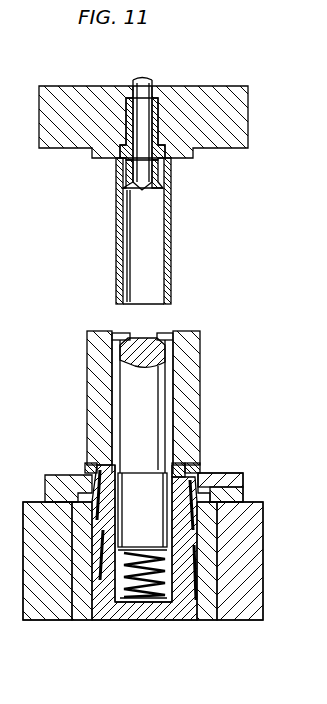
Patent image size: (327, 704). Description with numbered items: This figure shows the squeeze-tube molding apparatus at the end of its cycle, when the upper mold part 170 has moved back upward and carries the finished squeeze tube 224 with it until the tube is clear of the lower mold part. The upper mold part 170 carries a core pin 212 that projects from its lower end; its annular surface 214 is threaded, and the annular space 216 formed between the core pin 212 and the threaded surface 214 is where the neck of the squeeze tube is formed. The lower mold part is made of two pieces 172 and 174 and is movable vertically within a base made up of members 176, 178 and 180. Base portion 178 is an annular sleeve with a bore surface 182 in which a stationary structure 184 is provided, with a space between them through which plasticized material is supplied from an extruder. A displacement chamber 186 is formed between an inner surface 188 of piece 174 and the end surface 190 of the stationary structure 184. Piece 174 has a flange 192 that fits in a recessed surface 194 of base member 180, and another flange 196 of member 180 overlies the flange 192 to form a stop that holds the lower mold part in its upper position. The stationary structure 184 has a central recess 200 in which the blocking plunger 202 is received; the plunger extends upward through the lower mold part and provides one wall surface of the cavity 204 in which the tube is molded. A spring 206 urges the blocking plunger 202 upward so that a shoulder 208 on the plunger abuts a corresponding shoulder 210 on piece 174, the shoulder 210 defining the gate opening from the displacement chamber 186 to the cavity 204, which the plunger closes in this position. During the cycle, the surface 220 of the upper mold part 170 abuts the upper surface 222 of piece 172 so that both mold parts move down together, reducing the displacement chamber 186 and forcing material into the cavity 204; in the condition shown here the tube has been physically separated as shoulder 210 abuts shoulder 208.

The upper mold part 170 is at (249, 126).
The core pin 212 is at (150, 80).
The surface 220 is at (190, 158).
The annular space 216 is at (128, 170).
The annular surface 214 is at (170, 180).
The squeeze tube 224 is at (172, 252).
The upper surface 222 is at (195, 332).
The lower mold part piece 172 is at (197, 368).
The cavity 204 is at (190, 410).
The blocking plunger 202 is at (158, 422).
The shoulder 208 is at (170, 475).
The lower mold part piece 174 is at (203, 473).
The shoulder 210 is at (96, 470).
The base member 180 is at (243, 496).
The flange 196 is at (223, 475).
The flange 192 is at (243, 485).
The base member 176 is at (262, 556).
The base portion 178 is at (66, 518).
The recessed surface 194 is at (205, 520).
The bore surface 182 is at (200, 593).
The stationary structure 184 is at (104, 618).
The inner surface 188 is at (172, 483).
The displacement chamber 186 is at (175, 510).
The end surface 190 is at (175, 528).
The spring 206 is at (152, 587).
The central recess 200 is at (133, 593).